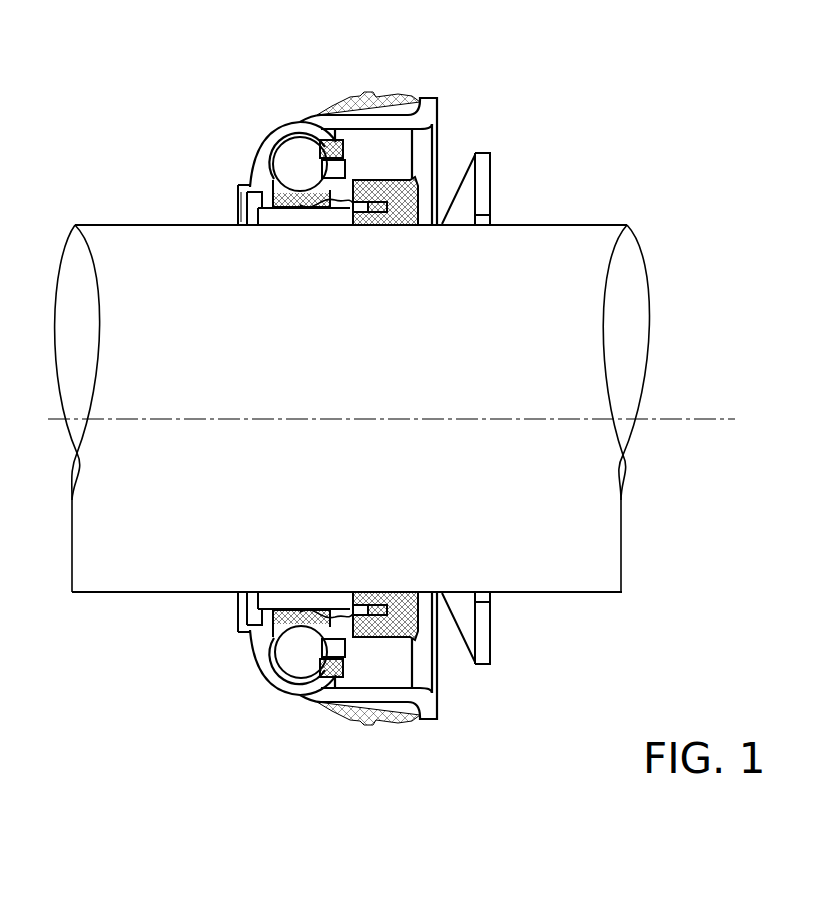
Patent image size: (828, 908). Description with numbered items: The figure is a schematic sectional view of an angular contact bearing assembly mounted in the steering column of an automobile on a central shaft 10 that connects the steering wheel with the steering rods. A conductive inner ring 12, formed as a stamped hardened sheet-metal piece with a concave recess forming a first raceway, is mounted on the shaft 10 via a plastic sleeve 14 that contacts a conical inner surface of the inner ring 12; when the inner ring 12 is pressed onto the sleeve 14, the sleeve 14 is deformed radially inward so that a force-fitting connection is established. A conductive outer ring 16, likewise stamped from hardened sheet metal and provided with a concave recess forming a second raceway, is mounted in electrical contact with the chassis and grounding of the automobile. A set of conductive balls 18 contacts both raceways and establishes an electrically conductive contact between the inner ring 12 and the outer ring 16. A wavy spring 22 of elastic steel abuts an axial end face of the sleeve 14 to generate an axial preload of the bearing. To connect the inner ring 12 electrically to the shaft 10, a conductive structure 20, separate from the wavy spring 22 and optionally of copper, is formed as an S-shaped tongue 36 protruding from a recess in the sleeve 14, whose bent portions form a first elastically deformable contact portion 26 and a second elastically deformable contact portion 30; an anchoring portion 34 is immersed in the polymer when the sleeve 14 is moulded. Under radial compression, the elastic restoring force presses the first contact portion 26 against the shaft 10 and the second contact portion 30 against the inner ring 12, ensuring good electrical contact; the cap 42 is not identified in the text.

The central shaft 10 is at (590, 478).
The inner ring 12 is at (247, 190).
The sleeve 14 is at (412, 162).
The outer ring 16 is at (282, 123).
The balls 18 is at (303, 160).
The conductive structure 20 is at (355, 178).
The wavy spring 22 is at (490, 180).
The first elastically deformable contact portion 26 is at (258, 160).
The second elastically deformable contact portion 30 is at (237, 222).
The anchoring portion 34 is at (437, 148).
The tongue 36 is at (238, 624).
The cap 42 is at (352, 110).